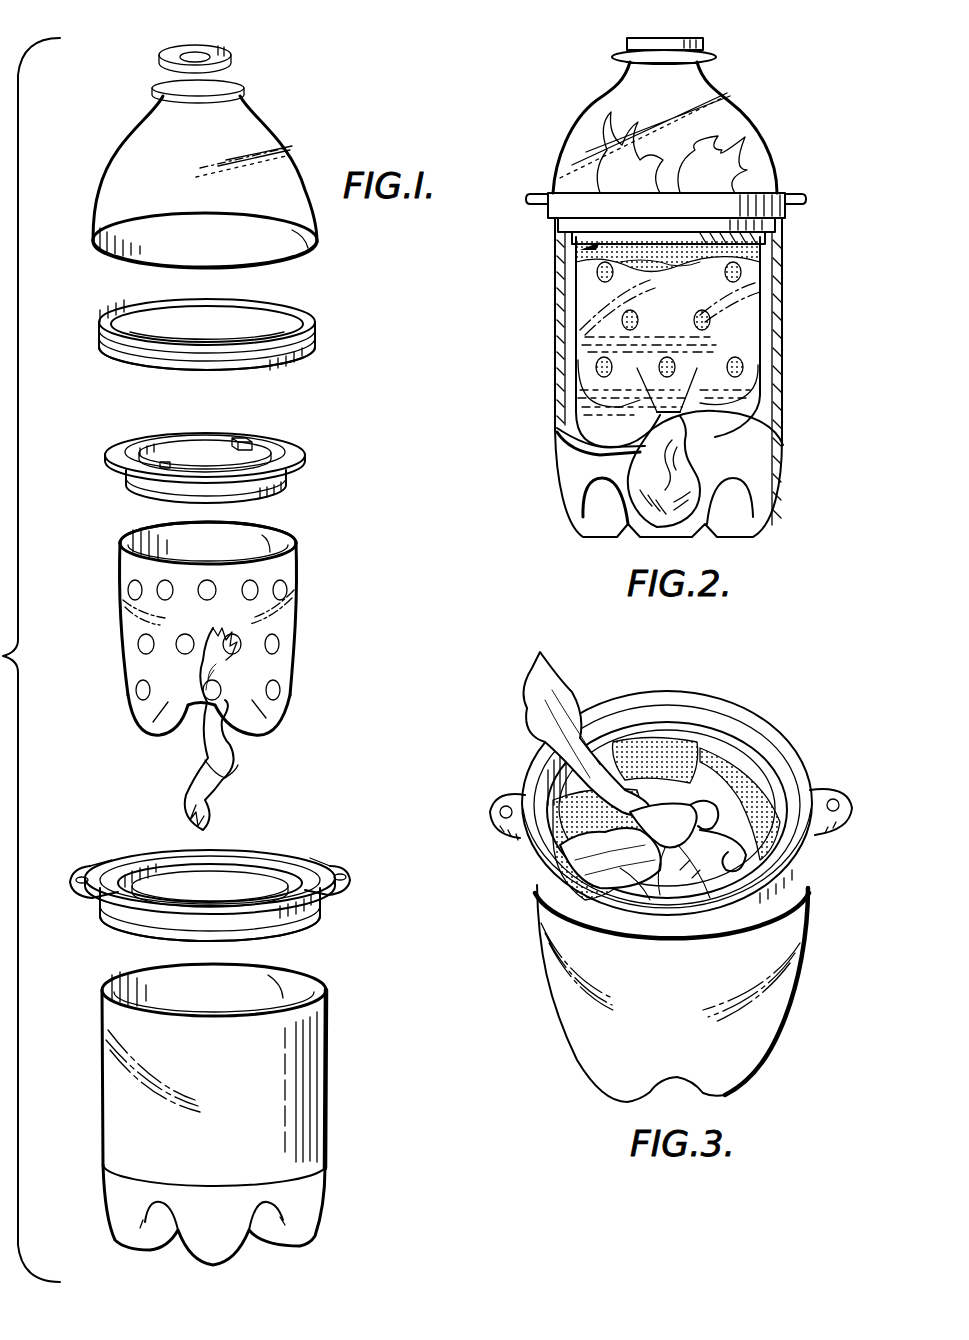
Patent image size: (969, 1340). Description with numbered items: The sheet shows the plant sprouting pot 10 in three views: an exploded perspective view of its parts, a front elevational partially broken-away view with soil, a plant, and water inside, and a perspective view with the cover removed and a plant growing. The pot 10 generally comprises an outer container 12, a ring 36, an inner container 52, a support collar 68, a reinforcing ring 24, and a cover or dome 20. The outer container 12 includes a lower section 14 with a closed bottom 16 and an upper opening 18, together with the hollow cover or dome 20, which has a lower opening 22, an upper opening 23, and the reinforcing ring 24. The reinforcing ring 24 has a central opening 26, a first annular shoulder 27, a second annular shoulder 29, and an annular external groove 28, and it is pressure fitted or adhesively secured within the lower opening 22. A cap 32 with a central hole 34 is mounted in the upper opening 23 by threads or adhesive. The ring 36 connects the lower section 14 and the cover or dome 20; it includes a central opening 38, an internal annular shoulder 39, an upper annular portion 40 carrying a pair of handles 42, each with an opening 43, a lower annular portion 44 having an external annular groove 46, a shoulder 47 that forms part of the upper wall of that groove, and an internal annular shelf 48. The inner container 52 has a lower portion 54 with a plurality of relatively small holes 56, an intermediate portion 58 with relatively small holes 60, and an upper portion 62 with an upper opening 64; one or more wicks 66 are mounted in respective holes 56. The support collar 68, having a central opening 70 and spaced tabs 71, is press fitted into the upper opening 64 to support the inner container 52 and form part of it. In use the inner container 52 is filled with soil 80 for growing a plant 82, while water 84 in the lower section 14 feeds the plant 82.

In FIG. 1, the plant sprouting pot 10 is at (227, 626).
In FIG. 2, the plant sprouting pot 10 is at (652, 342).
In FIG. 2, the outer container 12 is at (660, 287).
In FIG. 1, the lower section 14 is at (253, 1107).
In FIG. 2, the lower section 14 is at (669, 377).
In FIG. 3, the lower section 14 is at (545, 980).
In FIG. 1, the closed bottom 16 is at (300, 1246).
In FIG. 1, the upper opening 18 is at (262, 968).
In FIG. 1, the cover or dome 20 is at (286, 144).
In FIG. 2, the cover or dome 20 is at (620, 89).
In FIG. 1, the lower opening 22 is at (305, 248).
In FIG. 1, the upper opening 23 is at (225, 78).
In FIG. 1, the reinforcing ring 24 is at (316, 342).
In FIG. 2, the reinforcing ring 24 is at (576, 227).
In FIG. 1, the central opening 26 is at (290, 318).
In FIG. 1, the first annular shoulder 27 is at (290, 378).
In FIG. 1, the annular external groove 28 is at (100, 353).
In FIG. 1, the second annular shoulder 29 is at (125, 358).
In FIG. 1, the cap 32 is at (186, 42).
In FIG. 1, the central hole 34 is at (172, 66).
In FIG. 1, the ring 36 is at (222, 881).
In FIG. 2, the ring 36 is at (688, 190).
In FIG. 3, the ring 36 is at (745, 905).
In FIG. 1, the central opening 38 is at (190, 898).
In FIG. 1, the internal annular shoulder 39 is at (298, 880).
In FIG. 1, the upper annular portion 40 is at (130, 905).
In FIG. 1, the handles 42 is at (82, 866).
In FIG. 1, the opening 43 is at (345, 872).
In FIG. 2, the opening 43 is at (797, 195).
In FIG. 1, the lower annular portion 44 is at (120, 927).
In FIG. 1, the external annular groove 46 is at (140, 940).
In FIG. 1, the shoulder 47 is at (305, 928).
In FIG. 1, the internal annular shelf 48 is at (137, 875).
In FIG. 1, the inner container 52 is at (217, 626).
In FIG. 2, the inner container 52 is at (748, 303).
In FIG. 1, the lower portion 54 is at (276, 725).
In FIG. 1, the holes 56 is at (138, 690).
In FIG. 1, the intermediate portion 58 is at (300, 662).
In FIG. 1, the holes 60 is at (140, 642).
In FIG. 1, the upper portion 62 is at (298, 558).
In FIG. 1, the upper opening 64 is at (258, 528).
In FIG. 1, the wicks 66 is at (240, 780).
In FIG. 1, the support collar 68 is at (290, 442).
In FIG. 2, the support collar 68 is at (582, 253).
In FIG. 1, the central opening 70 is at (191, 458).
In FIG. 1, the tabs 71 is at (168, 445).
In FIG. 2, the soil 80 is at (668, 258).
In FIG. 3, the soil 80 is at (672, 770).
In FIG. 2, the plant 82 is at (664, 471).
In FIG. 3, the plant 82 is at (563, 688).
In FIG. 2, the water 84 is at (735, 340).